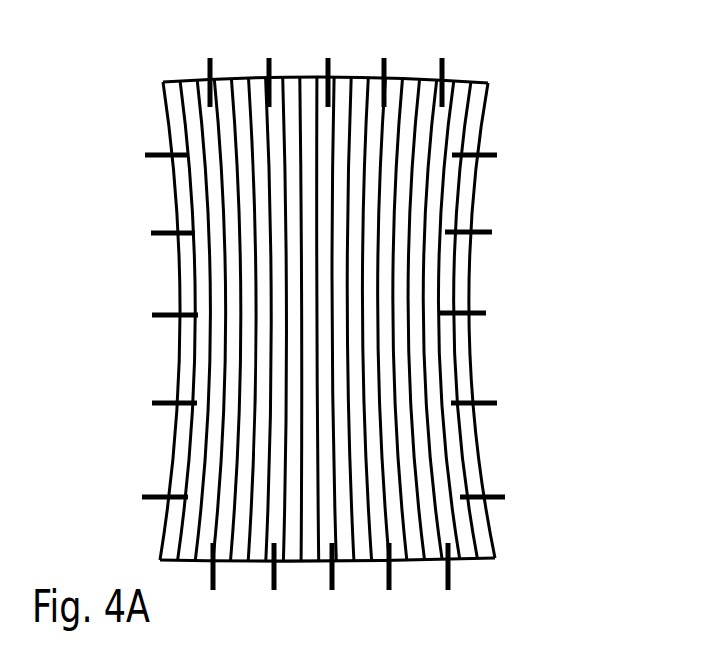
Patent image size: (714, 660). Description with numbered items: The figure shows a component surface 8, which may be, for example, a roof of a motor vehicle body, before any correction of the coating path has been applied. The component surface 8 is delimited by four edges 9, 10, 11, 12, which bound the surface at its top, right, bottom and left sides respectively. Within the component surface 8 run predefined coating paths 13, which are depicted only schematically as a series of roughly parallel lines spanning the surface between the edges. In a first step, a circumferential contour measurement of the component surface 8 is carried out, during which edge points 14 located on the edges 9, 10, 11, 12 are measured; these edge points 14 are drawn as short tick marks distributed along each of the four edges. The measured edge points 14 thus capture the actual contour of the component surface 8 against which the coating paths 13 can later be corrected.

The component surface 8 is at (113, 287).
The edge 9 is at (308, 78).
The edge 10 is at (482, 455).
The edge 11 is at (362, 562).
The edge 12 is at (175, 200).
The coating path 13 is at (218, 467).
The edge point 14 is at (487, 232).